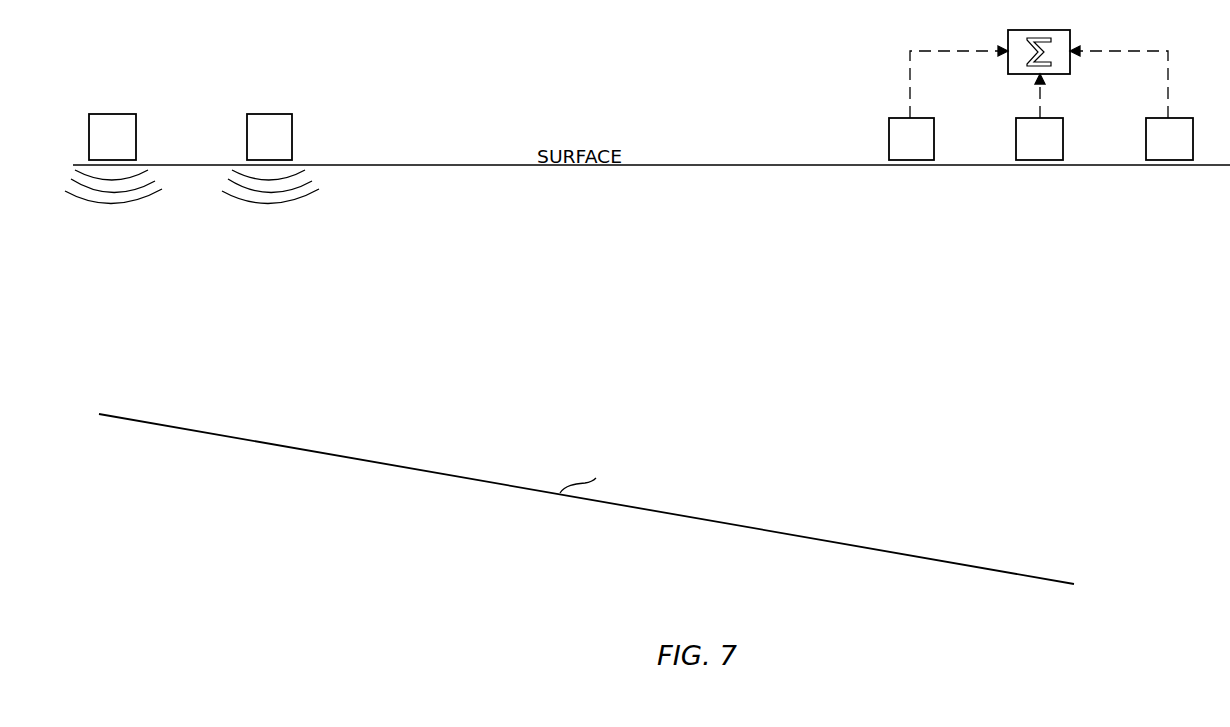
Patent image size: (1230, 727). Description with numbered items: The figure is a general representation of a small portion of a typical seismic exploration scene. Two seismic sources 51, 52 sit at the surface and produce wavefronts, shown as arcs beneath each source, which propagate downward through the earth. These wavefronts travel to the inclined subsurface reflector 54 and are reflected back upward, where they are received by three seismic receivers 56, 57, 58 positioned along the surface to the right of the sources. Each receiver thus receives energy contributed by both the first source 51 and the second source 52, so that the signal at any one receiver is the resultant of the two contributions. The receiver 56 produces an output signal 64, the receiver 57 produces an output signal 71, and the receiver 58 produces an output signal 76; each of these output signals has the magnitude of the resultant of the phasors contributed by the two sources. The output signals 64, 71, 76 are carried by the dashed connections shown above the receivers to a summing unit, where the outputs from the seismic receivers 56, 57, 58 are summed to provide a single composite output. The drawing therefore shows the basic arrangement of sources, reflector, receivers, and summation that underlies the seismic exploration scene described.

The seismic source 51 is at (292, 122).
The seismic source 52 is at (136, 122).
The reflector 54 is at (800, 536).
The seismic receiver 56 is at (934, 124).
The seismic receiver 57 is at (1063, 130).
The seismic receiver 58 is at (1150, 118).
The output signal 64 is at (910, 89).
The output signal 71 is at (1040, 98).
The output signal 76 is at (1168, 87).